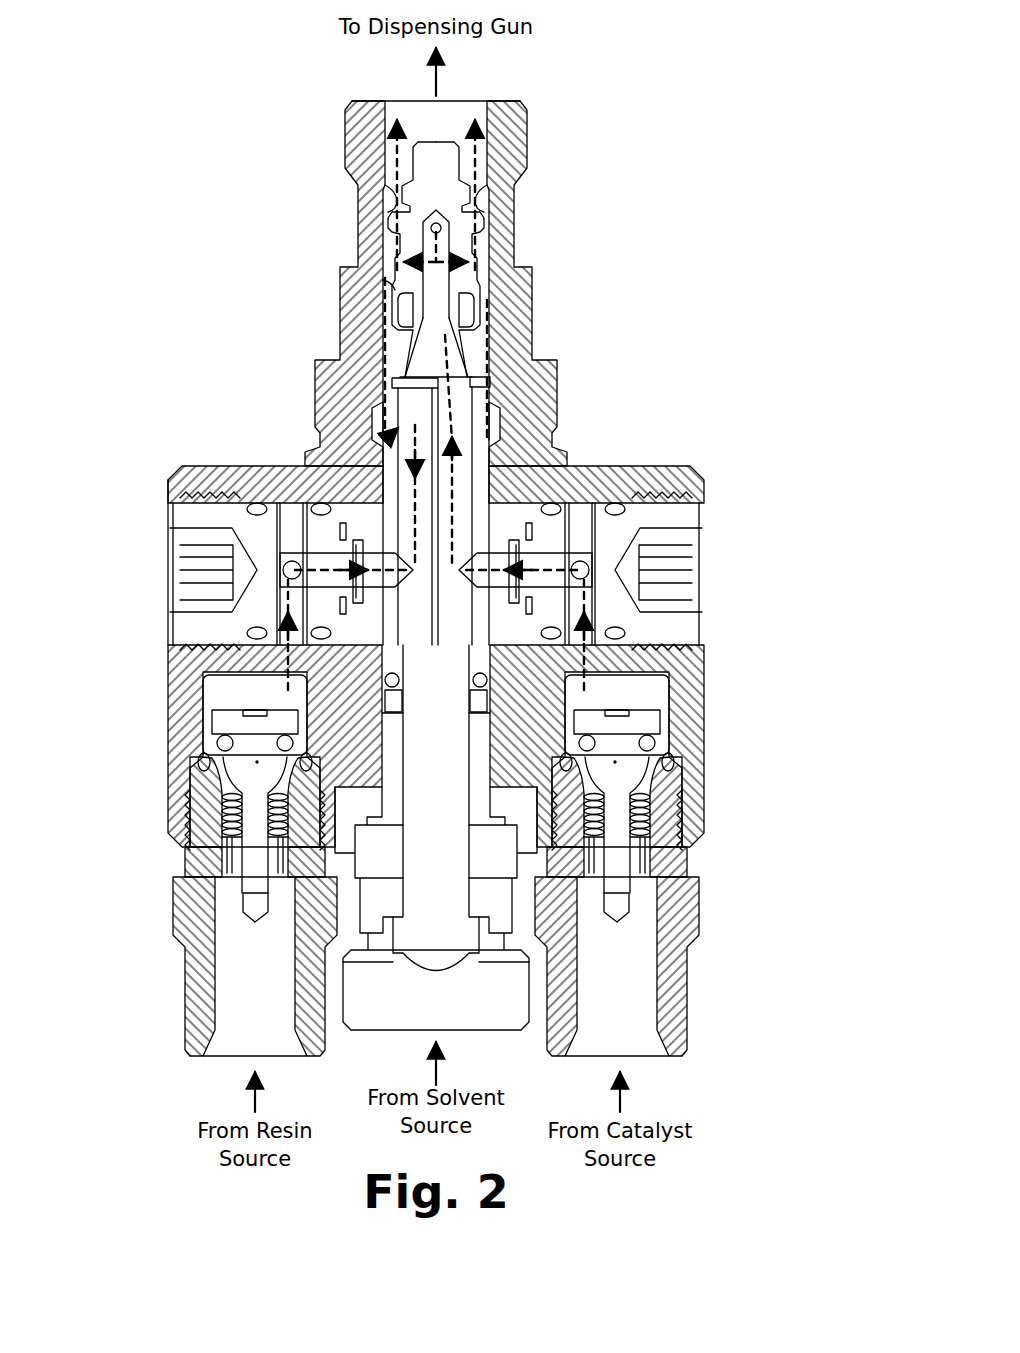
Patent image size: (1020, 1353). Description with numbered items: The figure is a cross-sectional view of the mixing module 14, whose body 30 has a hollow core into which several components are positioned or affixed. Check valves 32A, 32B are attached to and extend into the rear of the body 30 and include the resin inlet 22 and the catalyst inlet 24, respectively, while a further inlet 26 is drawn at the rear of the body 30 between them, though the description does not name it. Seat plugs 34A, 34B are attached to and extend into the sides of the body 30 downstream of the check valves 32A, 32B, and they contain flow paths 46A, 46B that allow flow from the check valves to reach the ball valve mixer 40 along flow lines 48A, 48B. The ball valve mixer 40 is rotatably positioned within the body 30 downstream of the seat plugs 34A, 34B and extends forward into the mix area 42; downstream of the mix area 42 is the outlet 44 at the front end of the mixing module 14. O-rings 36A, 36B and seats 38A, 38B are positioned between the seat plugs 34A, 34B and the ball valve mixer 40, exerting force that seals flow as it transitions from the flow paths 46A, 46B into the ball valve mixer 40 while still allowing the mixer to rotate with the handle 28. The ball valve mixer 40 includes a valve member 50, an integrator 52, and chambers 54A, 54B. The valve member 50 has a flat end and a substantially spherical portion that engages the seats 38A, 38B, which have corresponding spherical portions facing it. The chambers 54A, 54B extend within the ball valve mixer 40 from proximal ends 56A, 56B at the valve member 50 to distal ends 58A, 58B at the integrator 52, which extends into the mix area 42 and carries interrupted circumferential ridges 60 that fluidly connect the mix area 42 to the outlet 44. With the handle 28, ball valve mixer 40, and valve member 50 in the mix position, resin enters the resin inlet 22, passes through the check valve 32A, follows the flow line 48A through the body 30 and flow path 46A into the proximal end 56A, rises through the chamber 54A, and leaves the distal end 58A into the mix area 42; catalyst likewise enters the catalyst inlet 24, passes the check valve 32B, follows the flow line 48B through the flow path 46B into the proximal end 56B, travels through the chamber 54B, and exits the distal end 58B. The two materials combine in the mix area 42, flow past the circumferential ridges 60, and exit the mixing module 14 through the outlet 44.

The mixing module 14 is at (658, 232).
The resin inlet 22 is at (285, 1060).
The catalyst inlet 24 is at (660, 1058).
The solvent inlet fitting 26 is at (470, 1040).
The handle 28 is at (436, 972).
The body 30 is at (712, 742).
The check valve 32A is at (222, 832).
The check valve 32B is at (655, 815).
The seat plug 34A is at (158, 630).
The seat plug 34B is at (712, 630).
The O-ring 36A is at (328, 650).
The O-ring 36B is at (548, 650).
The seat 38A is at (390, 650).
The seat 38B is at (488, 655).
The ball valve mixer 40 is at (496, 468).
The mix area 42 is at (402, 232).
The outlet 44 is at (487, 100).
The flow path 46A is at (292, 503).
The flow path 46B is at (580, 503).
The flow line 48A is at (370, 314).
The flow line 48B is at (448, 338).
The valve member 50 is at (392, 598).
The integrator 52 is at (434, 135).
The chamber 54A is at (400, 448).
The chamber 54B is at (490, 440).
The proximal end 56A is at (282, 614).
The proximal end 56B is at (590, 614).
The distal end 58A is at (375, 420).
The distal end 58B is at (490, 302).
The circumferential ridges 60 is at (395, 188).